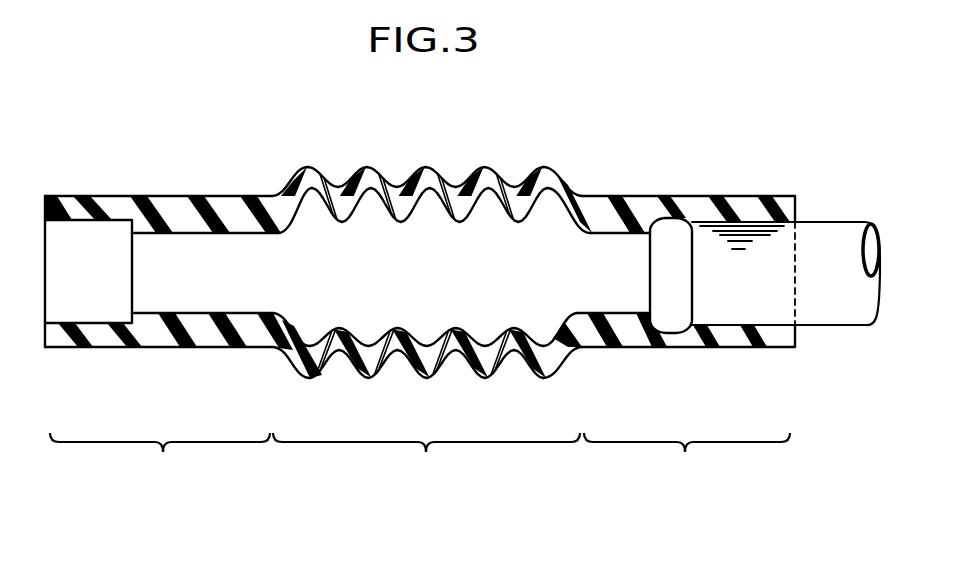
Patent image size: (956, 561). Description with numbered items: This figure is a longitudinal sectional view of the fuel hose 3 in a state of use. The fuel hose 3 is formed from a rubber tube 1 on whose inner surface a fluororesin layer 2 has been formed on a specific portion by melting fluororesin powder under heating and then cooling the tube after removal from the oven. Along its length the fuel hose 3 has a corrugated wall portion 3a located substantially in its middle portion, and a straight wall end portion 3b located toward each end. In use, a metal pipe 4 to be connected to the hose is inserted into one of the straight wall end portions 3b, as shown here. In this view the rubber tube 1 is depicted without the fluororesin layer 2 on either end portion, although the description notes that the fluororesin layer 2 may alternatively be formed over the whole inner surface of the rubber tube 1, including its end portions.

The rubber tube 1 is at (477, 173).
The fluororesin layer 2 is at (563, 188).
The fuel hose 3 is at (631, 186).
The corrugated wall portion 3a is at (426, 465).
The straight wall end portion 3b is at (420, 465).
The metal pipe 4 is at (847, 317).